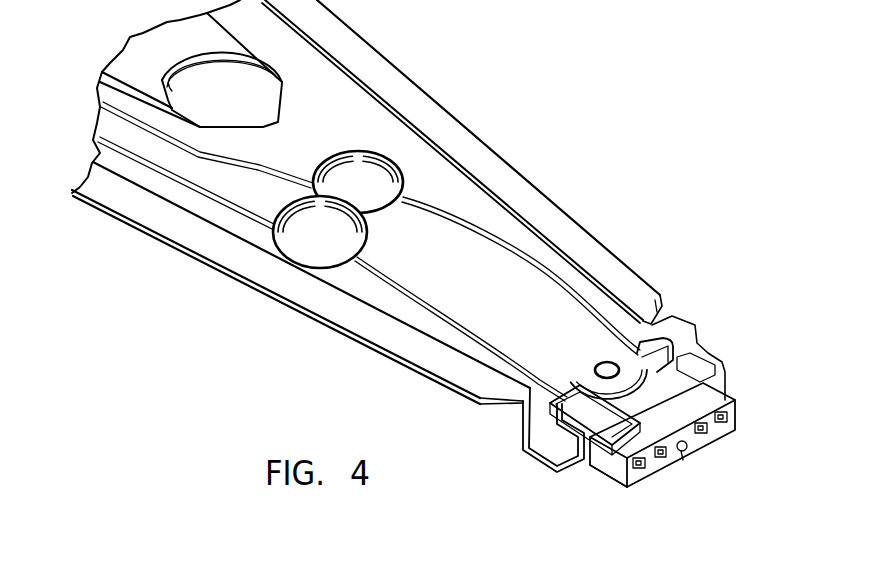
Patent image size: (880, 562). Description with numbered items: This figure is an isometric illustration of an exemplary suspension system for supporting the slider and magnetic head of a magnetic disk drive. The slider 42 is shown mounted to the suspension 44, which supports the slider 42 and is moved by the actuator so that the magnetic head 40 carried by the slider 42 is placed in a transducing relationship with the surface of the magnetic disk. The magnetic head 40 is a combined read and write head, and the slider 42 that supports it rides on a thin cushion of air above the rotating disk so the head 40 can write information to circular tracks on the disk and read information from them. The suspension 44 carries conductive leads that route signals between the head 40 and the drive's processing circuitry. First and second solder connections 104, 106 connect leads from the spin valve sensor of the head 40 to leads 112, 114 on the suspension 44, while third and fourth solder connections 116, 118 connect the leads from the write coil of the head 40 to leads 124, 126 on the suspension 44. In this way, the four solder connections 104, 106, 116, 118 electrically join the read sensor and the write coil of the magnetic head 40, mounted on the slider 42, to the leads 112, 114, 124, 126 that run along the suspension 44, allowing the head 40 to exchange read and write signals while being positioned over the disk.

The magnetic head 40 is at (688, 465).
The slider 42 is at (583, 471).
The suspension 44 is at (509, 159).
The first solder connection 104 is at (628, 490).
The second solder connection 106 is at (727, 413).
The lead 112 is at (385, 278).
The lead 114 is at (562, 282).
The third solder connection 116 is at (655, 462).
The fourth solder connection 118 is at (708, 438).
The lead 124 is at (366, 367).
The lead 126 is at (490, 235).